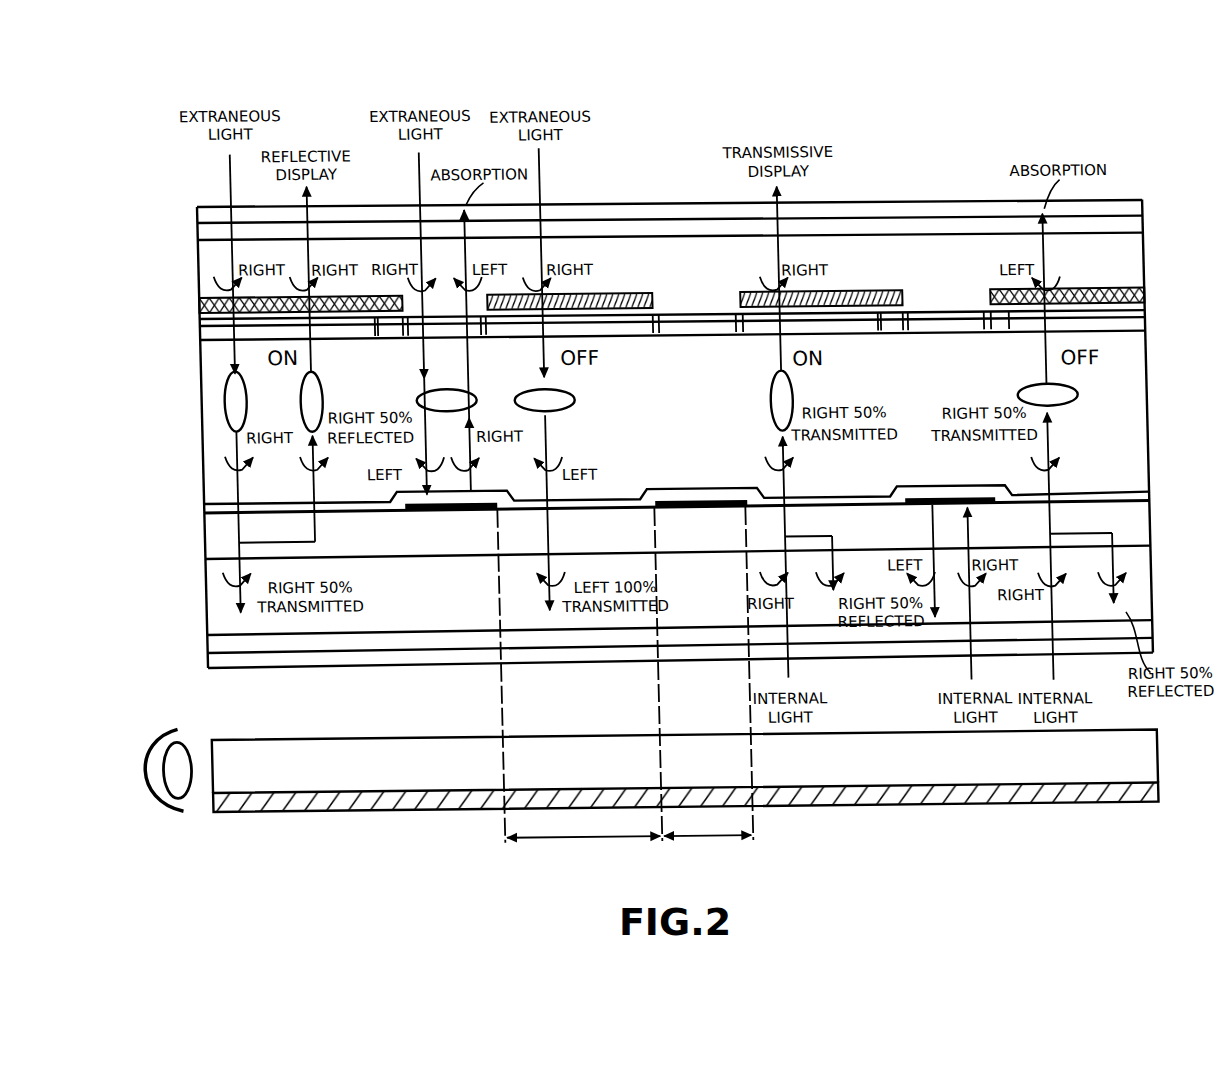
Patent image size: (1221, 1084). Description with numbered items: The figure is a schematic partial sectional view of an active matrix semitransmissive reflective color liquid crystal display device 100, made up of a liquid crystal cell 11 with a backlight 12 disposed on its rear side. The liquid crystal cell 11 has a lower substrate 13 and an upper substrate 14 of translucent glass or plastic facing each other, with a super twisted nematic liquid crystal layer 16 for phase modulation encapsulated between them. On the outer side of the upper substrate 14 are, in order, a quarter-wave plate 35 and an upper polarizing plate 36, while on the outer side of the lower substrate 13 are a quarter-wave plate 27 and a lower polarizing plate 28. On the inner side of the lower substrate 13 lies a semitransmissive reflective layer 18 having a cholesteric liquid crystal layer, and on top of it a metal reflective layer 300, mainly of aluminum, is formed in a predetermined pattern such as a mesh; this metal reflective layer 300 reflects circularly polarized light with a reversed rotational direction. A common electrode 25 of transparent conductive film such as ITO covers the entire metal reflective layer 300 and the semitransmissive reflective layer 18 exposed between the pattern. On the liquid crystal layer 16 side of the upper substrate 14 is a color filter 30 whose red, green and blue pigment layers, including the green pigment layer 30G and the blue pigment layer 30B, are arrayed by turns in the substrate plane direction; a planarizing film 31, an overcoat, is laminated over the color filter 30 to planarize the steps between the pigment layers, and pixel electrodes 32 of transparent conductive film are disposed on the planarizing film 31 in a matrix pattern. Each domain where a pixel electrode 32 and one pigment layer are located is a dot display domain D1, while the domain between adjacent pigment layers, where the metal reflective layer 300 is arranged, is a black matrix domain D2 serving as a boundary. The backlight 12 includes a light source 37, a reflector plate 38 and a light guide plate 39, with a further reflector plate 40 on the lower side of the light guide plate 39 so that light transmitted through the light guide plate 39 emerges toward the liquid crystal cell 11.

The liquid crystal display device 100 is at (922, 192).
The liquid crystal cell 11 is at (181, 250).
The backlight 12 is at (146, 722).
The lower substrate 13 is at (1134, 594).
The upper substrate 14 is at (1132, 265).
The liquid crystal layer 16 is at (1135, 418).
The semitransmissive reflective layer 18 is at (1135, 536).
The common electrode 25 is at (699, 466).
The wave plate 27 is at (1137, 629).
The lower polarizing plate 28 is at (1137, 652).
The color filter 30 is at (699, 336).
The G pigment layer 30G is at (652, 327).
The B pigment layer 30B is at (880, 330).
The planarizing film 31 is at (1135, 325).
The pixel electrode 32 is at (1131, 343).
The wave plate 35 is at (1145, 239).
The upper polarizing plate 36 is at (1145, 213).
The light source 37 is at (170, 751).
The reflector plate 38 is at (137, 806).
The light guide plate 39 is at (1134, 762).
The reflector plate 40 is at (1136, 800).
The metal reflective layer 300 is at (687, 504).
The dot display domain D1 is at (579, 675).
The black matrix domain D2 is at (704, 674).